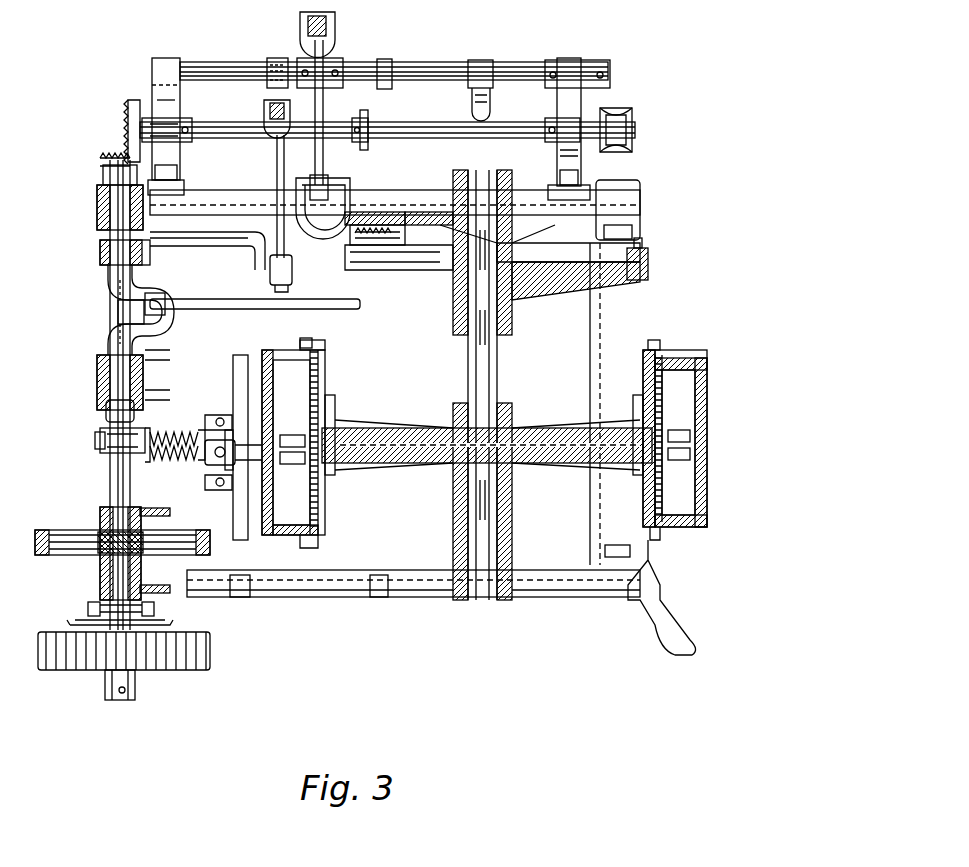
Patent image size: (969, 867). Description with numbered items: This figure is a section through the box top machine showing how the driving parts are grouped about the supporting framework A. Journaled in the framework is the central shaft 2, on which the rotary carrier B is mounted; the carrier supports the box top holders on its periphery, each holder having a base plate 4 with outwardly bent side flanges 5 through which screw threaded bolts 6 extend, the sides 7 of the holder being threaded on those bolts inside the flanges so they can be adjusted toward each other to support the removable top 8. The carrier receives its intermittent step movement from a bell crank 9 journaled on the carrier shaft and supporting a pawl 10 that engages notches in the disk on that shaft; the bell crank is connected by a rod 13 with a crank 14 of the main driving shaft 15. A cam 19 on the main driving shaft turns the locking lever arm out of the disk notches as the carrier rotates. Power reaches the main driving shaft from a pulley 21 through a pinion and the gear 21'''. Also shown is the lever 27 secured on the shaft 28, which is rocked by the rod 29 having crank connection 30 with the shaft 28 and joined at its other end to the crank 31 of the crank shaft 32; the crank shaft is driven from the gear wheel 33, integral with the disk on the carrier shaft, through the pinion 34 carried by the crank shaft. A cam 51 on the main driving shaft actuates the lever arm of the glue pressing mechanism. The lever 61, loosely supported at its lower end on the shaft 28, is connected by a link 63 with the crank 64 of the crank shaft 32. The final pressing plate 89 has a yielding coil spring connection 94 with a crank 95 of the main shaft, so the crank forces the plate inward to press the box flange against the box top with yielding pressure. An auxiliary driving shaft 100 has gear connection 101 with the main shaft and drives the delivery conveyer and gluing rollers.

The central shaft 2 is at (468, 368).
The base plate 4 is at (640, 380).
The side flanges 5 is at (660, 355).
The screw threaded bolts 6 is at (318, 342).
The sides of the box top holder 7 is at (284, 420).
The removable top 8 is at (274, 408).
The bell crank 9 is at (570, 290).
The pawl 10 is at (650, 262).
The rod 13 is at (303, 310).
The crank 14 is at (112, 298).
The main driving shaft 15 is at (97, 223).
The cam 19 is at (98, 258).
The pulley 21 is at (147, 666).
The gear 21''' is at (114, 562).
The lever 27 is at (493, 100).
The shaft 28 is at (437, 68).
The rod 29 is at (278, 160).
The crank connection 30 is at (275, 98).
The crank 31 is at (294, 274).
The crank shaft 32 is at (218, 240).
The gear wheel 33 is at (372, 262).
The pinion 34 is at (358, 210).
The cam 51 is at (100, 515).
The lever 61 is at (330, 62).
The link 63 is at (326, 108).
The crank 64 is at (330, 188).
The final pressing plate 89 is at (240, 505).
The coil spring connection 94 is at (170, 458).
The crank 95 is at (108, 462).
The auxiliary driving shaft 100 is at (590, 128).
The gear connection 101 is at (128, 145).
The supporting framework A is at (565, 578).
The rotary carrier B is at (405, 455).